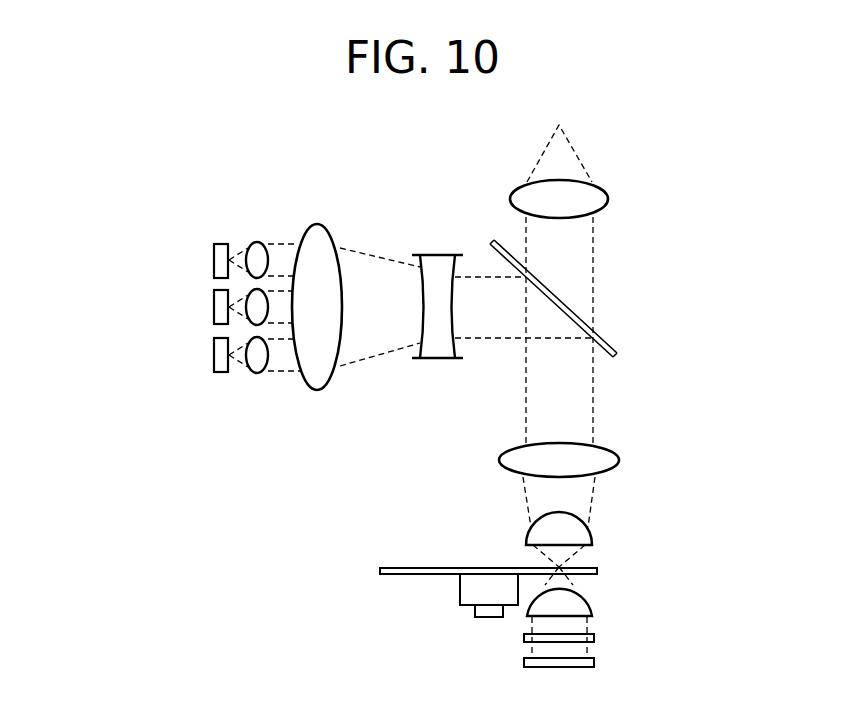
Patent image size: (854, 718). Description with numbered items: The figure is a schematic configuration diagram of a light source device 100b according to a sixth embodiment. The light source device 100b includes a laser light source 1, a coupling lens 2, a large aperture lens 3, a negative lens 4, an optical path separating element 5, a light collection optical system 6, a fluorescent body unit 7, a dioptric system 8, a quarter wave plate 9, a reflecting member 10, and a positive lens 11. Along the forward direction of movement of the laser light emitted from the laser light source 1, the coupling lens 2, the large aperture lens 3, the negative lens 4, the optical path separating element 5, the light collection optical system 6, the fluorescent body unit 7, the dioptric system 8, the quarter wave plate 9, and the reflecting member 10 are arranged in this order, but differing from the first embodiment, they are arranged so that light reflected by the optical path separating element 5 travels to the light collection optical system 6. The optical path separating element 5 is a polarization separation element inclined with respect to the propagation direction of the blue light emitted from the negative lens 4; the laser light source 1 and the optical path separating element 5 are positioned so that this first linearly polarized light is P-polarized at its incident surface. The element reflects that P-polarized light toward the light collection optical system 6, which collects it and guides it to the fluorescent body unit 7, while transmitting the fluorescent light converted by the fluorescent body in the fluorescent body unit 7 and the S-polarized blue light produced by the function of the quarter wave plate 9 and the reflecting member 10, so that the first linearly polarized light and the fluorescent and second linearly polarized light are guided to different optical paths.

The light source device 100b is at (632, 157).
The laser light source 1 is at (205, 232).
The coupling lens 2 is at (262, 372).
The large aperture lens 3 is at (318, 391).
The negative lens 4 is at (438, 359).
The optical path separating element 5 is at (604, 338).
The light collection optical system 6 is at (592, 540).
The fluorescent body unit 7 is at (425, 575).
The dioptric system 8 is at (592, 600).
The quarter wave plate 9 is at (594, 638).
The reflecting member 10 is at (570, 668).
The positive lens 11 is at (608, 199).